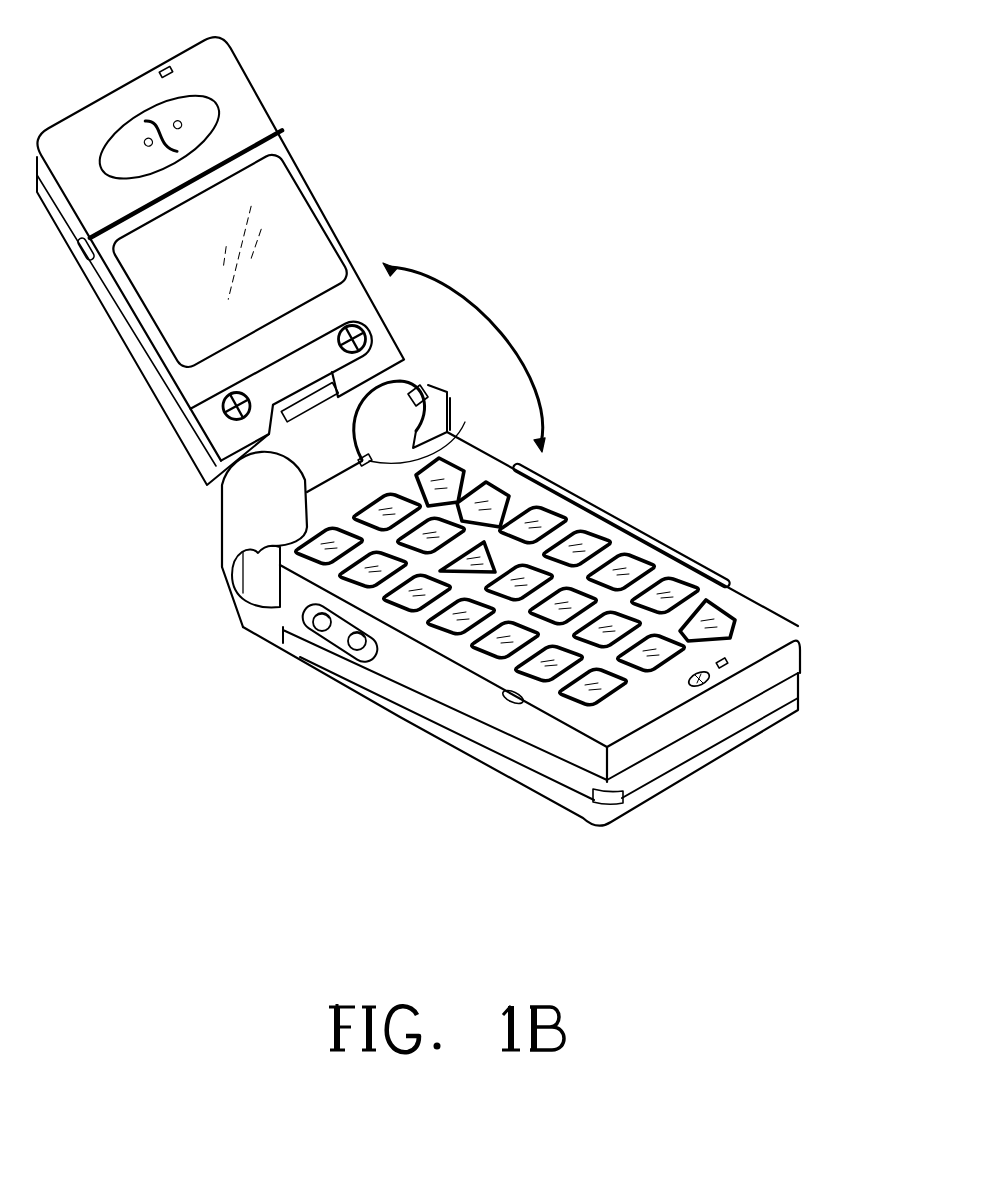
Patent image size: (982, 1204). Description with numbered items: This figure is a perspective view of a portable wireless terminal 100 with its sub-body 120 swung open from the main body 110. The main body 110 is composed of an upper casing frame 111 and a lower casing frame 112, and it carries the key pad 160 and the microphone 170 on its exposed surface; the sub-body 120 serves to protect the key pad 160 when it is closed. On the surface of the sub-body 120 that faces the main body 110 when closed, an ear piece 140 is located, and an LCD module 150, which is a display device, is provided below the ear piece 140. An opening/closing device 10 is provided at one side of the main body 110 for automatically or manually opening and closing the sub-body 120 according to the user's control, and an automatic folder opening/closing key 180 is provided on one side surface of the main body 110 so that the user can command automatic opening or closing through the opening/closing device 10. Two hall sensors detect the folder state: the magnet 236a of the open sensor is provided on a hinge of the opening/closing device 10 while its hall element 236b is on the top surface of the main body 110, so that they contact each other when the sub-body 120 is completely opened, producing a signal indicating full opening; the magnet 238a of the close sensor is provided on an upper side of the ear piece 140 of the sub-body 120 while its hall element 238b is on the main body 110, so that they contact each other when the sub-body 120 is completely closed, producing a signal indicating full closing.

The portable wireless terminal 100 is at (632, 418).
The main body 110 is at (526, 777).
The upper casing frame 111 is at (790, 657).
The lower casing frame 112 is at (795, 690).
The sub-body 120 is at (126, 352).
The ear piece 140 is at (160, 137).
The LCD module 150 is at (230, 261).
The key pad 160 is at (608, 524).
The microphone 170 is at (702, 672).
The automatic folder opening/closing key 180 is at (356, 652).
The opening/closing device 10 is at (388, 392).
The magnet 236a is at (369, 457).
The hall element 236b is at (465, 422).
The magnet 238a is at (166, 67).
The hall element 238b is at (730, 656).